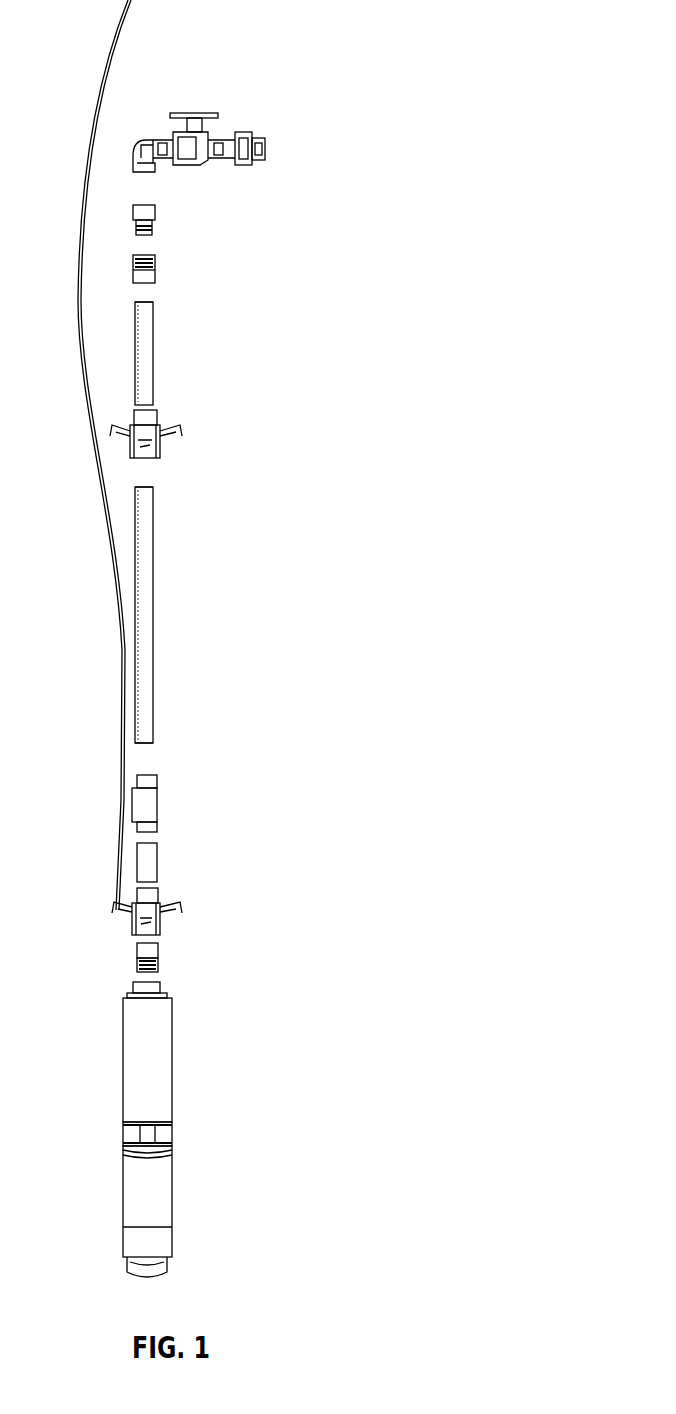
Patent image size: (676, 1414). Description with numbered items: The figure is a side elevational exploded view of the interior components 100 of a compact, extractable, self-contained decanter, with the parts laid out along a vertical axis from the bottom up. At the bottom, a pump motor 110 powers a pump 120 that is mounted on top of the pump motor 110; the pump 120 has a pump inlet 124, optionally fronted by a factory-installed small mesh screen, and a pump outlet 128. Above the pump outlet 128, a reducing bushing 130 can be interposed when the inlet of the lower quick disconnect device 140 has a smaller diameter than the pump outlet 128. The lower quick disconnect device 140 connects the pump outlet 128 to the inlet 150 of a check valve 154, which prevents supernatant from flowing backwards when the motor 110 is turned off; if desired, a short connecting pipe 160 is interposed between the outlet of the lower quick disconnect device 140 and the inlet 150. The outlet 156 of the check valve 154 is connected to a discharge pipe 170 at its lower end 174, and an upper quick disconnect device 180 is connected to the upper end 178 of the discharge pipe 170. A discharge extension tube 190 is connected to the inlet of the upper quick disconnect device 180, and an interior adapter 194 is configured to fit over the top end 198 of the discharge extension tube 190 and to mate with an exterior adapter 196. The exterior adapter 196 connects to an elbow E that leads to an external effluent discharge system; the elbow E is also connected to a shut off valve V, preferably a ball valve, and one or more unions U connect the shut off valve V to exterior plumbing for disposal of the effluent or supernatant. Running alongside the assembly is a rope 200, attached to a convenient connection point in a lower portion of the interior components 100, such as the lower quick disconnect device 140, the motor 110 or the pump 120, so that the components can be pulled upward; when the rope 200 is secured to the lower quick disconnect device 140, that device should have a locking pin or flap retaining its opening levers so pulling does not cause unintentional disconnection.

The interior components 100 is at (384, 36).
The pump motor 110 is at (158, 1205).
The pump 120 is at (158, 1077).
The pump inlet 124 is at (127, 1135).
The pump outlet 128 is at (129, 987).
The reducing bushing 130 is at (158, 955).
The lower quick disconnect device 140 is at (158, 925).
The inlet of check valve 150 is at (152, 828).
The check valve 154 is at (152, 795).
The outlet of check valve 156 is at (150, 781).
The short connecting pipe 160 is at (157, 865).
The discharge pipe 170 is at (148, 593).
The lower end of discharge pipe 174 is at (148, 727).
The upper end of discharge pipe 178 is at (153, 508).
The upper quick disconnect device 180 is at (182, 430).
The discharge extension tube 190 is at (147, 375).
The interior adapter 194 is at (155, 266).
The exterior adapter 196 is at (155, 216).
The top end of discharge extension tube 198 is at (153, 317).
The rope 200 is at (116, 830).
The elbow E is at (133, 146).
The shut off valve V is at (206, 132).
The union U is at (243, 166).